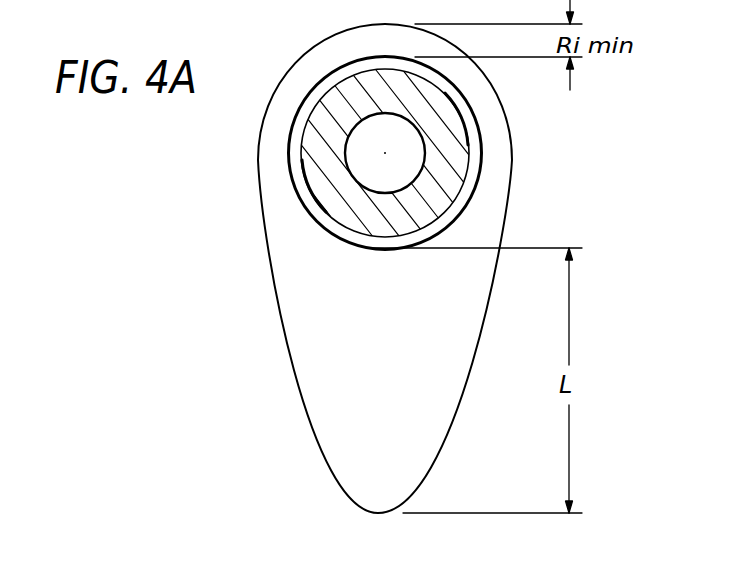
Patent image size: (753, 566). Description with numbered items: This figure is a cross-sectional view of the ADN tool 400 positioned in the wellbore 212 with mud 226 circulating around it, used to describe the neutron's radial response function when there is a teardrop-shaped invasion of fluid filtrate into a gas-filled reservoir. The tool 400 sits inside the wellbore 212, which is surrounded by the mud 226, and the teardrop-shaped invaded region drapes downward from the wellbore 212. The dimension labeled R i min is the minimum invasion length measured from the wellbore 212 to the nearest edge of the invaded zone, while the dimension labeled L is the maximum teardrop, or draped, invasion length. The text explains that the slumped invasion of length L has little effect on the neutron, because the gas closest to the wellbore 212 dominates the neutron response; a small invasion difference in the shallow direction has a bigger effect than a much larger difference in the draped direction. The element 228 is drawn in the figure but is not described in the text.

The wellbore 212 is at (300, 333).
The mud 226 is at (470, 187).
The central lumen 228 is at (358, 153).
The ADN tool 400 is at (350, 87).